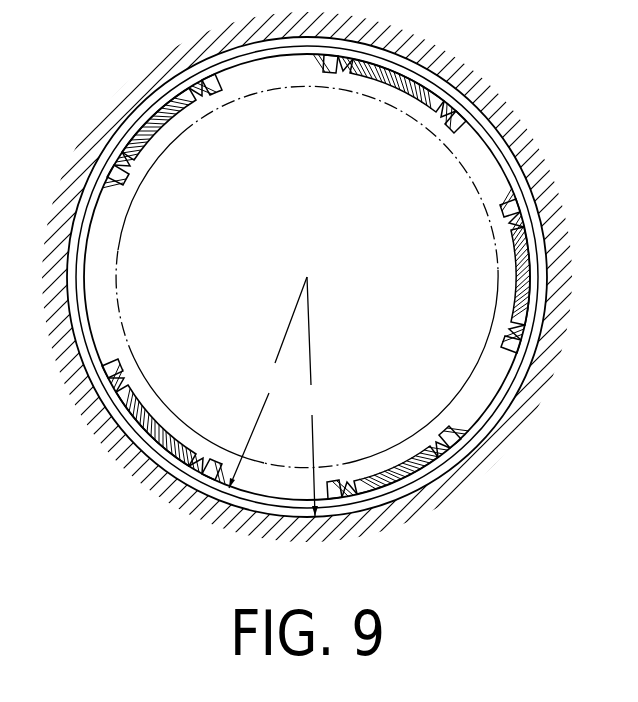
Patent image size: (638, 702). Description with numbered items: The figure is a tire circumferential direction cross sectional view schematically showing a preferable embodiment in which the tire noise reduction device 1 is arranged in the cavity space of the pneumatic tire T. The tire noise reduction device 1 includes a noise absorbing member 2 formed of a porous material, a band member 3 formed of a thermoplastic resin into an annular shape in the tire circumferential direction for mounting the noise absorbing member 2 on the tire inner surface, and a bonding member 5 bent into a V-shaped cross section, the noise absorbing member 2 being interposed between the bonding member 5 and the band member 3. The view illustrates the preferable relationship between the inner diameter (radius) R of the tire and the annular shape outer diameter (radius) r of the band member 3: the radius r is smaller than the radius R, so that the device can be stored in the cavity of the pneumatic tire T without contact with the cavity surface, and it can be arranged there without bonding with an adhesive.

The tire noise reduction device 1 is at (390, 87).
The noise absorbing member 2 is at (430, 107).
The band member 3 is at (84, 257).
The bonding member 5 is at (197, 93).
The pneumatic tire T is at (511, 77).
The inner diameter (radius) of the tire R is at (310, 396).
The annular shape outer diameter (radius) of the band member r is at (268, 382).